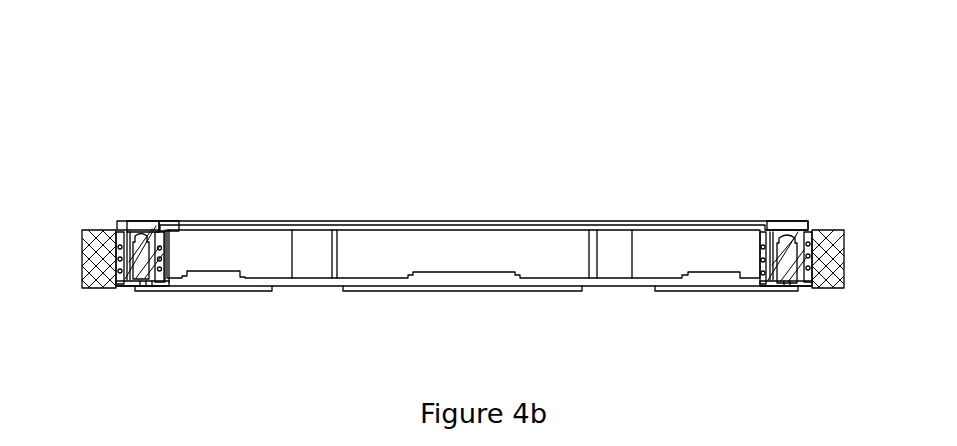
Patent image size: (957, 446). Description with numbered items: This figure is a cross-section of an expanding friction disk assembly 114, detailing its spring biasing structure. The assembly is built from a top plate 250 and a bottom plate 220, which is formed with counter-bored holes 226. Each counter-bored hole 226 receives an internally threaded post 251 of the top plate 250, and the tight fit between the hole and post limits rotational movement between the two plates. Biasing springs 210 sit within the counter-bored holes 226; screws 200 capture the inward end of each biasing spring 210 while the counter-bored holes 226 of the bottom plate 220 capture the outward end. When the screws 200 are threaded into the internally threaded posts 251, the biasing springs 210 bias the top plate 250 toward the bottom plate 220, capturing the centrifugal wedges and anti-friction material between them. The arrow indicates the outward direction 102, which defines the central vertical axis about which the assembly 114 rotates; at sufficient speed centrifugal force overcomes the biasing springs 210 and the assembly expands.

The outward direction 102 is at (471, 62).
The expanding friction disk assembly 114 is at (471, 265).
The screws 200 is at (120, 289).
The biasing springs 210 is at (163, 273).
The bottom plate 220 is at (102, 289).
The counter-bored holes 226 is at (120, 231).
The top plate 250 is at (148, 218).
The internally threaded posts 251 is at (161, 244).